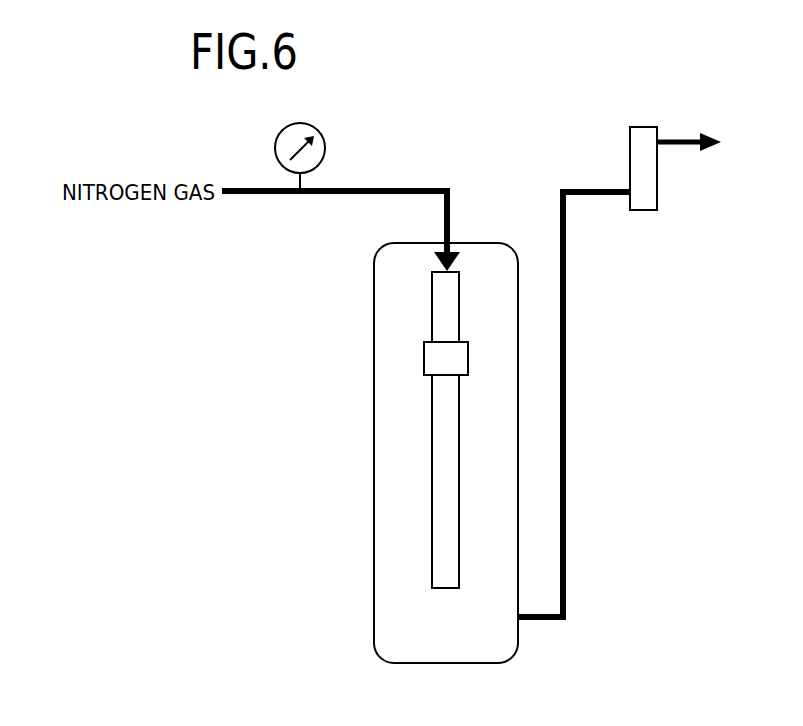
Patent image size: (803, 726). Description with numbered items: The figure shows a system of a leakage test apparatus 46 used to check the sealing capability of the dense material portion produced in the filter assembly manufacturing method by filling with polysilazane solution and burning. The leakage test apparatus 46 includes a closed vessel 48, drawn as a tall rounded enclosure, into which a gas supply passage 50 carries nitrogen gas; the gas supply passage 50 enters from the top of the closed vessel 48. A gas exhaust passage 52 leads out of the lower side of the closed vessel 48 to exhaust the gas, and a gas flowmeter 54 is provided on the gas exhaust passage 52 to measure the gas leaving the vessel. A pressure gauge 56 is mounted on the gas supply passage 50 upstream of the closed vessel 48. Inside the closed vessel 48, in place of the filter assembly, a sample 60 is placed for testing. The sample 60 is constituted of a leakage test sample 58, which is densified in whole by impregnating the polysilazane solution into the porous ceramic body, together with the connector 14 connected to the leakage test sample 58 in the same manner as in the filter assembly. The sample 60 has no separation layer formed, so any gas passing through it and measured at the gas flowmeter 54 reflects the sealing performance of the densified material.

The connector 14 is at (443, 307).
The leakage test apparatus 46 is at (318, 563).
The closed vessel 48 is at (373, 488).
The gas supply passage 50 is at (375, 190).
The gas exhaust passage 52 is at (567, 433).
The gas flowmeter 54 is at (638, 157).
The pressure gauge 56 is at (314, 161).
The leakage test sample 58 is at (443, 433).
The sample 60 is at (406, 371).